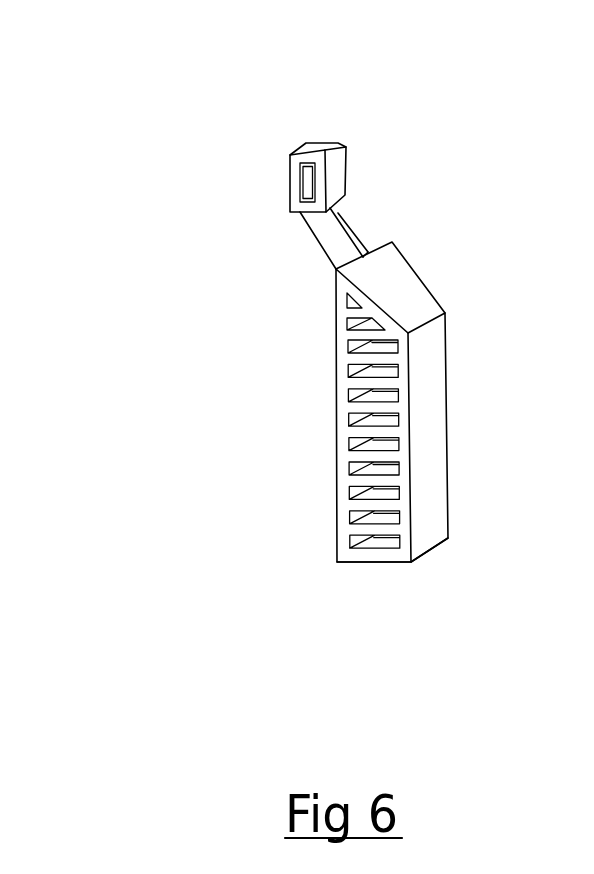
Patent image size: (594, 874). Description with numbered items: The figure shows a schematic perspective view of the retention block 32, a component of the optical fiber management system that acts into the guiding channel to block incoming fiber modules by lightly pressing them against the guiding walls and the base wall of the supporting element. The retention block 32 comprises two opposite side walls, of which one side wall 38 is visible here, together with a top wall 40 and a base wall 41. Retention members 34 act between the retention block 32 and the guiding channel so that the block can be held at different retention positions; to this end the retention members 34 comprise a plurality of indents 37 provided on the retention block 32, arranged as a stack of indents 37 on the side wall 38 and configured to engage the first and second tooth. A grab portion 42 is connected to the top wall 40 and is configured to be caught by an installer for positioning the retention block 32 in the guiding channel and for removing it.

The retention block 32 is at (318, 305).
The retention members 34 is at (390, 454).
The indents 37 is at (360, 376).
The side wall 38 is at (340, 430).
The top wall 40 is at (405, 283).
The base wall 41 is at (387, 562).
The grab portion 42 is at (334, 174).